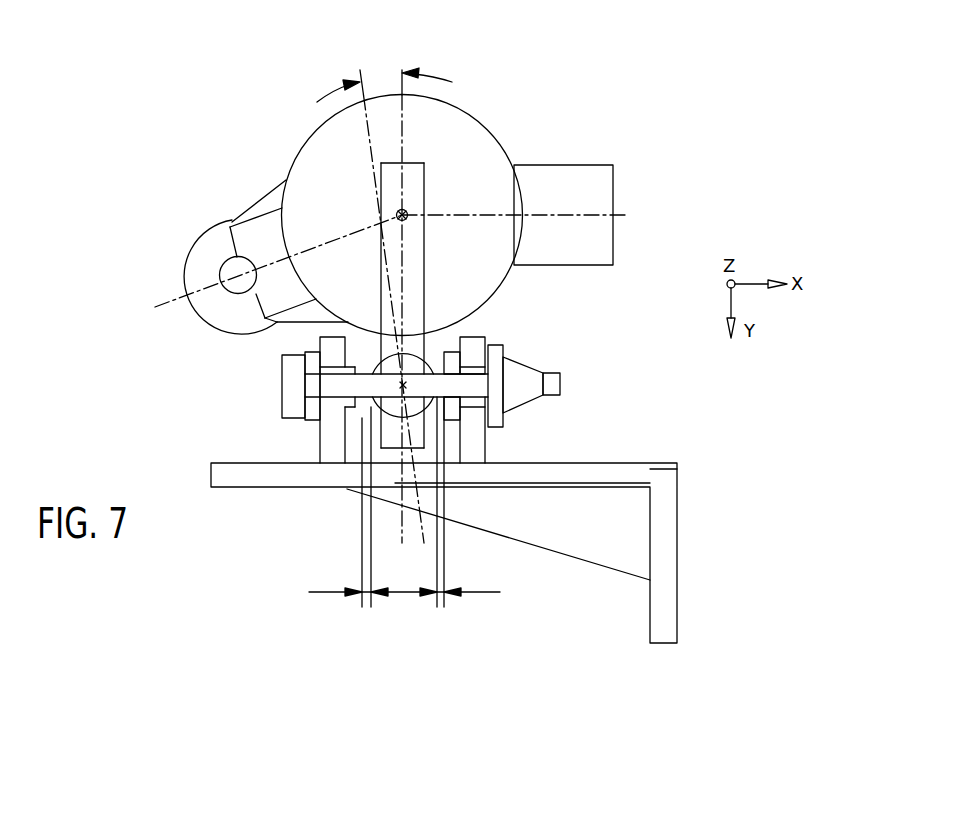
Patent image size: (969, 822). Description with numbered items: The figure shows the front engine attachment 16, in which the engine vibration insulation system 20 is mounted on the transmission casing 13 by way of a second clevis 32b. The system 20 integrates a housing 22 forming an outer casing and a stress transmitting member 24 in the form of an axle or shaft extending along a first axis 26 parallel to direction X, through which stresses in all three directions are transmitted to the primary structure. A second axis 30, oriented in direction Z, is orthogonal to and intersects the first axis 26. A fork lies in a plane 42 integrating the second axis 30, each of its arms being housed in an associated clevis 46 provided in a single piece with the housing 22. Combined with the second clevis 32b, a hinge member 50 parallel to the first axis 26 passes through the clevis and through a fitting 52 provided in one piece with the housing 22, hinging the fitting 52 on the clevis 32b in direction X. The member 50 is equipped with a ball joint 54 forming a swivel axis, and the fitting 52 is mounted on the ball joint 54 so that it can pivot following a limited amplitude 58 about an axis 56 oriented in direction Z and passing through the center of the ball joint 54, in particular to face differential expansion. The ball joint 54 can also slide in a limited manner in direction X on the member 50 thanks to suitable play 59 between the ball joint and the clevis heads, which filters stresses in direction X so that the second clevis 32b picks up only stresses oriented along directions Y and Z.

The casing of the transmission 13 is at (629, 473).
The front engine attachment 16 is at (446, 174).
The engine vibration insulation system 20 is at (375, 174).
The housing 22 is at (327, 163).
The stress transmitting member 24 is at (573, 180).
The first axis 26 is at (605, 213).
The second axis 30 is at (408, 211).
The second clevis 32b is at (475, 448).
The plane of the fork 42 is at (163, 303).
The clevis of the housing 46 is at (207, 238).
The hinge member 50 is at (330, 387).
The fitting 52 is at (413, 272).
The ball joint 54 is at (417, 362).
The pivot axis 56 is at (400, 386).
The limited amplitude 58 is at (330, 92).
The play 59 is at (322, 594).